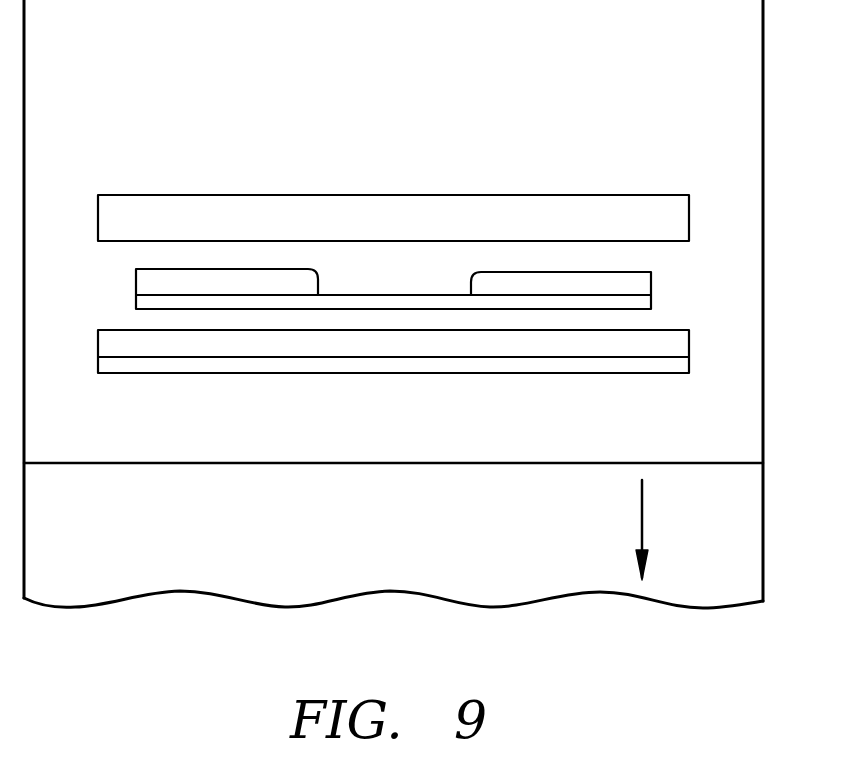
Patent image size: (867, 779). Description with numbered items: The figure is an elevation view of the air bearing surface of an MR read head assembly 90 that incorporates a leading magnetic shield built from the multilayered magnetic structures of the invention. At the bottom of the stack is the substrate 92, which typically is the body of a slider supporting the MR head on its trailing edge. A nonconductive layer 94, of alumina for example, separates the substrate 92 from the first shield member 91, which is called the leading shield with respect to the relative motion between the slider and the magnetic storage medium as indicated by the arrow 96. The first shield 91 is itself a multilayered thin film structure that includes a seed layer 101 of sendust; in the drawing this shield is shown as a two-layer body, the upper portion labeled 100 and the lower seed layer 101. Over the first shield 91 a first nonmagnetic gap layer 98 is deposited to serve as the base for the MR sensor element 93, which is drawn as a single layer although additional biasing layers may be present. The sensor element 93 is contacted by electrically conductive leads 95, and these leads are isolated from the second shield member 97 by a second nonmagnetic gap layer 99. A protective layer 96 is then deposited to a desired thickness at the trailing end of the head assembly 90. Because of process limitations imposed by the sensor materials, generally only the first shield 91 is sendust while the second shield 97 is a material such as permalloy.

The MR read head assembly 90 is at (680, 296).
The first shield member 91 is at (678, 351).
The substrate 92 is at (412, 543).
The MR sensor element 93 is at (157, 303).
The nonconductive layer 94 is at (412, 428).
The electrically conductive leads 95 is at (213, 287).
The arrow / protective layer 96 is at (644, 500).
The second shield member 97 is at (673, 219).
The first nonmagnetic gap layer 98 is at (637, 320).
The second nonmagnetic gap layer 99 is at (663, 259).
The upper layer 100 is at (97, 345).
The seed layer 101 is at (97, 368).